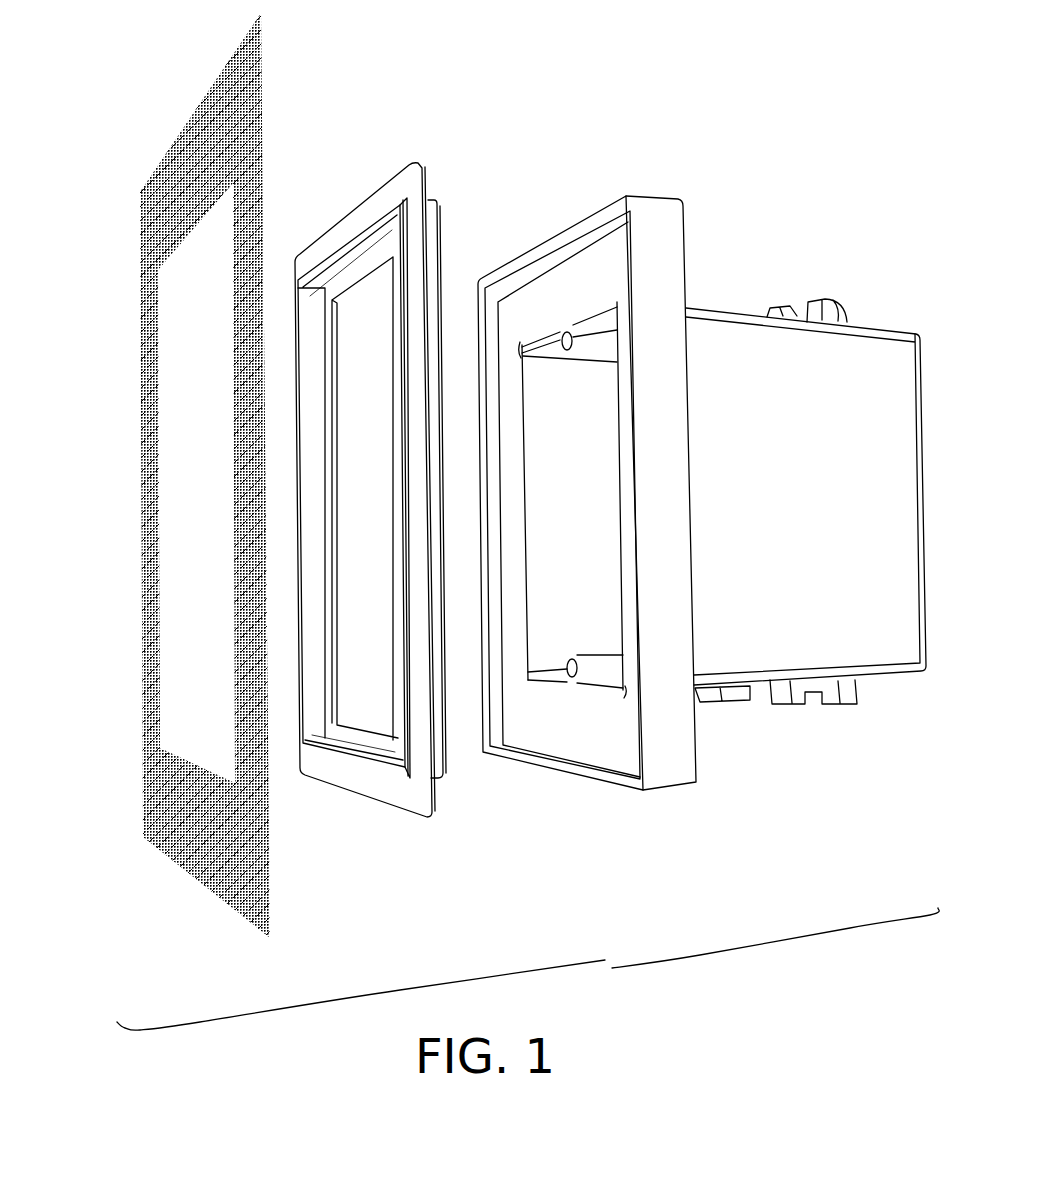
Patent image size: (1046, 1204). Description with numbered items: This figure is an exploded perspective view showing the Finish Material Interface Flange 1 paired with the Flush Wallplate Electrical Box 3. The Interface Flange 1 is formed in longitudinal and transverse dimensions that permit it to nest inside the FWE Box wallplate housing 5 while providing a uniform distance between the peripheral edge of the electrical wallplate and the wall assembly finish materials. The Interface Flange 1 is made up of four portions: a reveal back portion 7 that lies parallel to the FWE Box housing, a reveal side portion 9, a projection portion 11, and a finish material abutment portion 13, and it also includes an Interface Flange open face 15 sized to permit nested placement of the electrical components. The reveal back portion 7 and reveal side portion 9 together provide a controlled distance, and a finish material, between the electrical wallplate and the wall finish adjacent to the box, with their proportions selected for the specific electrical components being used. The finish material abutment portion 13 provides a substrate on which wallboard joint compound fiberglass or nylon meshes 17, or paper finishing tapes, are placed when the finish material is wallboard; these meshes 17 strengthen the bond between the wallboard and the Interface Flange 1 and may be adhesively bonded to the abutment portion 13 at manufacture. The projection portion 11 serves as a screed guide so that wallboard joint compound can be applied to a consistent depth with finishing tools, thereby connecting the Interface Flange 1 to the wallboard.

The finish material interface flange 1 is at (392, 428).
The flush wallplate electrical box 3 is at (857, 318).
The FWE Box wallplate housing 5 is at (655, 194).
The reveal back portion 7 is at (365, 498).
The reveal side portion 9 is at (377, 235).
The projection portion 11 is at (380, 215).
The finish material abutment portion 13 is at (408, 182).
The interface flange open face 15 is at (373, 484).
The wallboard joint compound mesh 17 is at (153, 150).